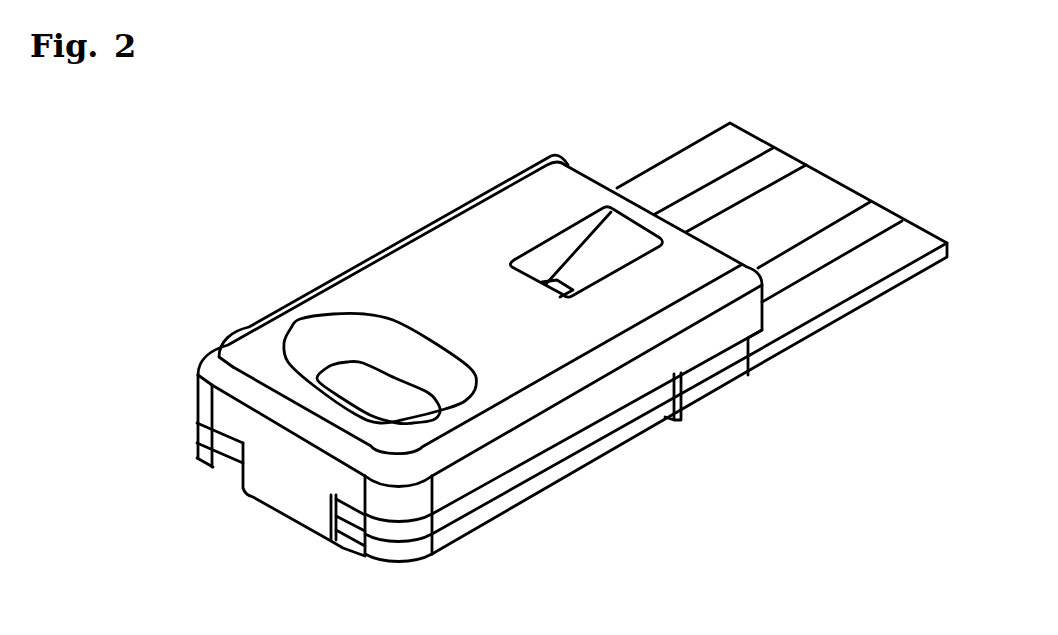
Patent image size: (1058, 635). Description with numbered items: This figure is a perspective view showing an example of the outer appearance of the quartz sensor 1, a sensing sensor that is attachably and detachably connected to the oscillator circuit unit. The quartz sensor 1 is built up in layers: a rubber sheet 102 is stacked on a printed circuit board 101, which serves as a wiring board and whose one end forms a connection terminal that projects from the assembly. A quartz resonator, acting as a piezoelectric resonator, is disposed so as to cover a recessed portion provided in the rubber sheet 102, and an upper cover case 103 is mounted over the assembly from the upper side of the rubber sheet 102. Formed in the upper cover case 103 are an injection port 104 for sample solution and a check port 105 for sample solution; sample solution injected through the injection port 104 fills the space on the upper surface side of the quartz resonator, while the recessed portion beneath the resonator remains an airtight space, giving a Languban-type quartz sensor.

The quartz sensor 1 is at (382, 224).
The printed circuit board 101 is at (607, 443).
The rubber sheet 102 is at (520, 477).
The upper cover case 103 is at (708, 388).
The injection port 104 is at (315, 345).
The check port 105 is at (606, 250).